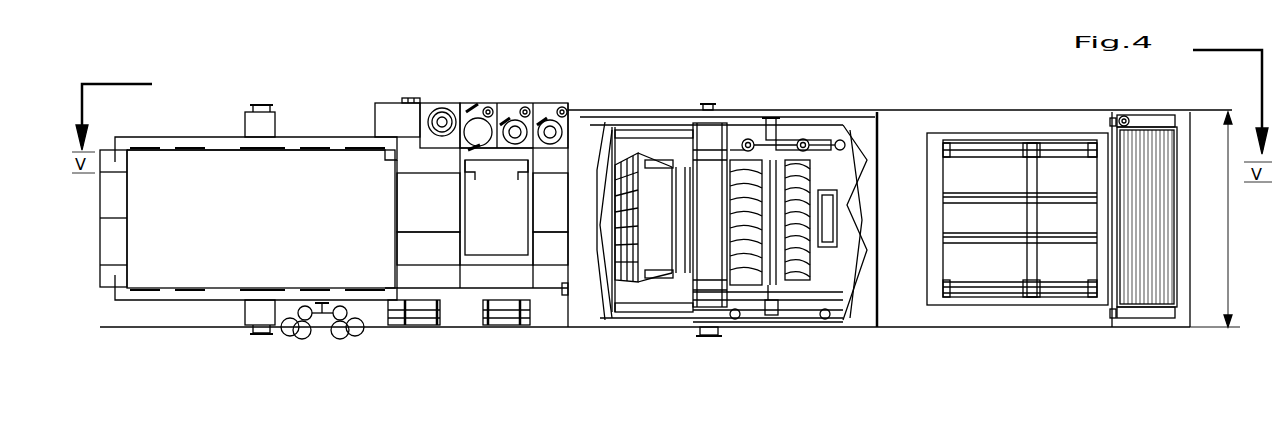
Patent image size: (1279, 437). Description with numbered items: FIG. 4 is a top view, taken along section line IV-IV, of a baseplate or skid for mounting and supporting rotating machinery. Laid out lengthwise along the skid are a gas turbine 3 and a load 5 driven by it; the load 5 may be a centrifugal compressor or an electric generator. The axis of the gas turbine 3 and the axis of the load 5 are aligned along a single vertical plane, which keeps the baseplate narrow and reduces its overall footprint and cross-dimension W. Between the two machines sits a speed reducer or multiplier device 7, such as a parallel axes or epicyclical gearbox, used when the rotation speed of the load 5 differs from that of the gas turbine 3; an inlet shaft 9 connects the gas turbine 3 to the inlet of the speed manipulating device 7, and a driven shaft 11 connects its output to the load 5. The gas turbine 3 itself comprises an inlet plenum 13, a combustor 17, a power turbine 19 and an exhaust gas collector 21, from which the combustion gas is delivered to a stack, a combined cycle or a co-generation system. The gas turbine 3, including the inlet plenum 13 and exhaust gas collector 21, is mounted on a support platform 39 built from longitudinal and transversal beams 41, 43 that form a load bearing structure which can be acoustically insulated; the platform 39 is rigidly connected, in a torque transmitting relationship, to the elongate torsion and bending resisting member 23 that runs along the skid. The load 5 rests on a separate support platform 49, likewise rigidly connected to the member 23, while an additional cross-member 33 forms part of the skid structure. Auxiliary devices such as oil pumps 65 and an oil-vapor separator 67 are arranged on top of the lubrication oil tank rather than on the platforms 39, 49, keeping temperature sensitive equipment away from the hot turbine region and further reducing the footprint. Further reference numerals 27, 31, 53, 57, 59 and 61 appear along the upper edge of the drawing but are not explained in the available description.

The gas turbine 3 is at (903, 92).
The load 5 is at (253, 226).
The speed reducer or multiplier device 7 is at (505, 226).
The inlet shaft 9 is at (546, 228).
The driven shaft 11 is at (420, 228).
The inlet plenum 13 is at (988, 133).
The combustor 17 is at (803, 140).
The power turbine 19 is at (750, 140).
The exhaust gas collector 21 is at (637, 152).
The elongate torsion and bending resisting member 23 is at (883, 2).
The module 27 is at (212, 0).
The module 31 is at (847, 12).
The additional cross-member 33 is at (713, 12).
The support platform 39 is at (750, 325).
The longitudinal beam 41 is at (866, 288).
The transversal beam 43 is at (836, 140).
The support platform 49 is at (360, 143).
The module 53 is at (635, 12).
The module 57 is at (452, 12).
The module 59 is at (320, 12).
The module 61 is at (556, 12).
The oil pumps 65 is at (530, 135).
The oil-vapor separator 67 is at (408, 120).